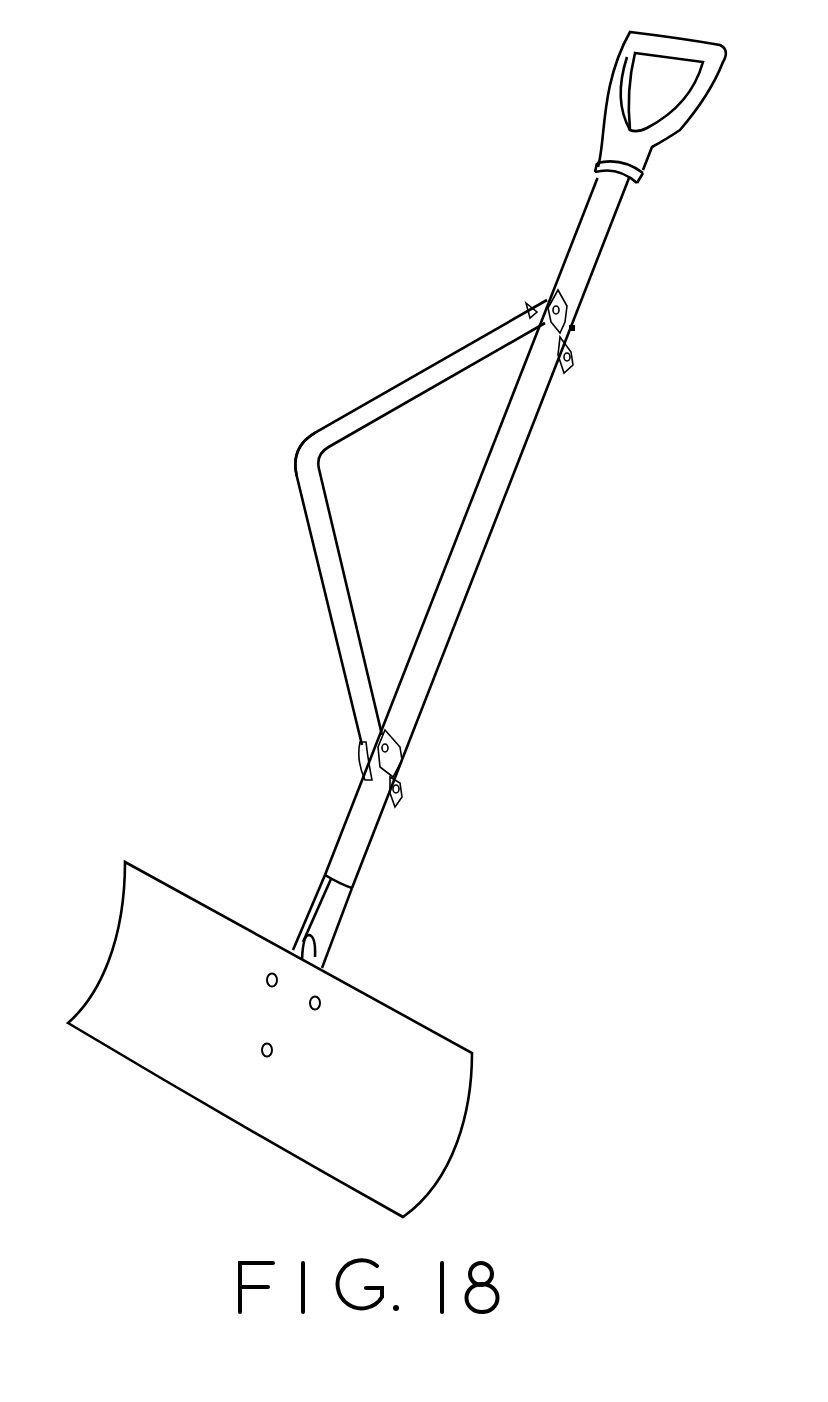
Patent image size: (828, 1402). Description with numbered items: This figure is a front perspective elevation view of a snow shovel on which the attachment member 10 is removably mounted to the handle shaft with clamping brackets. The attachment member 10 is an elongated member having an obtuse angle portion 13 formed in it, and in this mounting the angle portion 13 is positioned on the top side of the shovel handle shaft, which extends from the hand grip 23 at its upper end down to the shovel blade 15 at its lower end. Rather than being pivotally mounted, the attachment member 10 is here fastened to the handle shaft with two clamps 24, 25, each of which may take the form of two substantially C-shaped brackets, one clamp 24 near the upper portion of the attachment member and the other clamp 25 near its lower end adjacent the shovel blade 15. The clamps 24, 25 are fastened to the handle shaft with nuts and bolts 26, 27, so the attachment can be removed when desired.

The attachment member 10 is at (423, 367).
The obtuse angle portion 13 is at (315, 460).
The shovel blade 15 is at (370, 1037).
The hand grip 23 is at (653, 43).
The clamp 24 is at (577, 325).
The clamp 25 is at (397, 760).
The nuts and bolts 26 is at (571, 363).
The nuts and bolts 27 is at (407, 795).